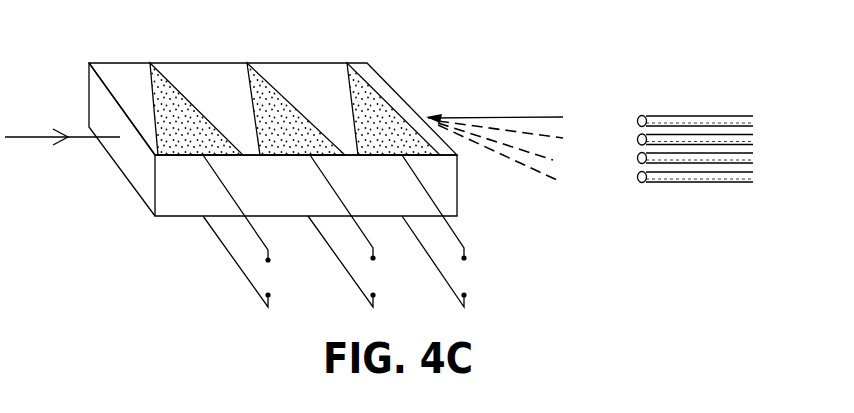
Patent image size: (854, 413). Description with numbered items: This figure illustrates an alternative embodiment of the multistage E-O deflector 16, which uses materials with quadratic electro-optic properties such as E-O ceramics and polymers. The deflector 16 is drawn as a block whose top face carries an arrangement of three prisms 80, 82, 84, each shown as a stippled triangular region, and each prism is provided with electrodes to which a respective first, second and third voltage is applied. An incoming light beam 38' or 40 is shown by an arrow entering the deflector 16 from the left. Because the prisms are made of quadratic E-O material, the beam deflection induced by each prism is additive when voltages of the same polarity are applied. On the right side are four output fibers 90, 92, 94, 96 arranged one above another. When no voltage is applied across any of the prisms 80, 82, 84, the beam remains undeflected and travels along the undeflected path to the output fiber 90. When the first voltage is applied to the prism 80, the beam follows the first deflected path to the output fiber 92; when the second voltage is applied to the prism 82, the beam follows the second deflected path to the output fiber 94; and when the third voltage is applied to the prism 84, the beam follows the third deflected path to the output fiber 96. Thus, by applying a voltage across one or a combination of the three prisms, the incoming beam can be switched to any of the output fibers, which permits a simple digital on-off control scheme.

The E-O deflector 16 is at (302, 156).
The input light beam 38' is at (62, 162).
The input light beam 40 is at (22, 140).
The prism 80 is at (148, 78).
The prism 82 is at (260, 75).
The prism 84 is at (372, 90).
The output fiber 90 is at (692, 113).
The output fiber 92 is at (726, 133).
The output fiber 94 is at (733, 153).
The output fiber 96 is at (680, 182).